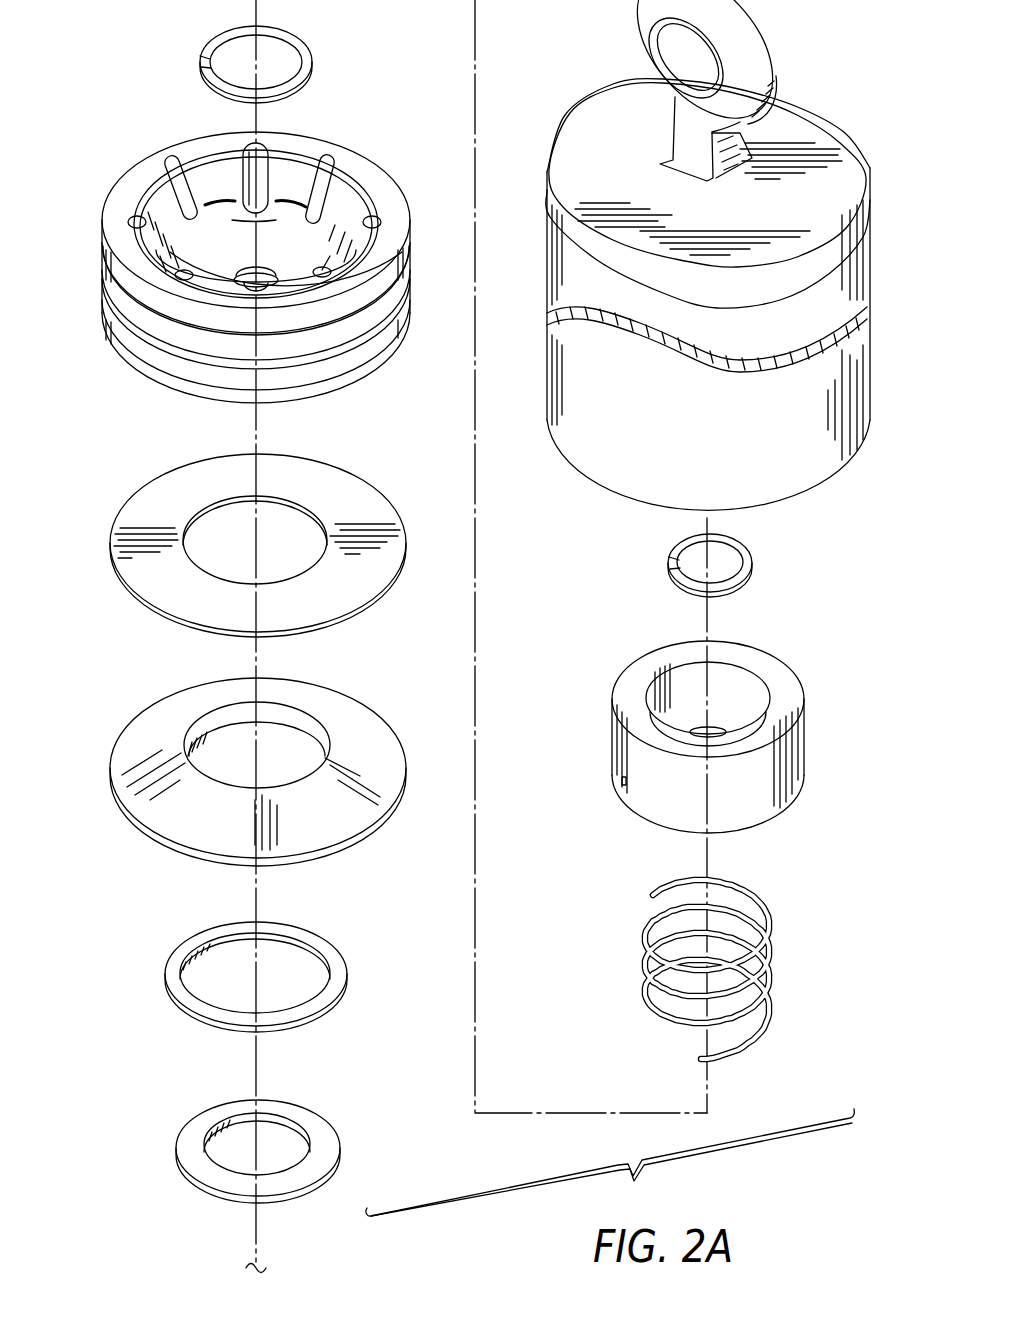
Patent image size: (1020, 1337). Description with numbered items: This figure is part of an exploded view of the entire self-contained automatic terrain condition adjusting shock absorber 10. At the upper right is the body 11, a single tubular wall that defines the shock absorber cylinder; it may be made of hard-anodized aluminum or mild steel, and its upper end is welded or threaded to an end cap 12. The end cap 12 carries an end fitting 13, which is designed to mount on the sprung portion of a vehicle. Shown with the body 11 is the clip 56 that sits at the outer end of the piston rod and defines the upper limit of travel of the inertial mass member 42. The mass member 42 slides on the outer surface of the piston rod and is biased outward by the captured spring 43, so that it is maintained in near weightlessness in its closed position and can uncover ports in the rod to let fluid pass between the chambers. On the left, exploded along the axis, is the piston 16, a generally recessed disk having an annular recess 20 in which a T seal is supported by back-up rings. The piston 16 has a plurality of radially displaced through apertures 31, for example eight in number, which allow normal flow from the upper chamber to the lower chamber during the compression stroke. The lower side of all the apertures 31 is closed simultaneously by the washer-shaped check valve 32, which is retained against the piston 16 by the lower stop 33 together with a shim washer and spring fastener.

The shock absorber 10 is at (610, 1162).
The body 11 is at (881, 272).
The end cap 12 is at (817, 116).
The end fitting 13 is at (650, 36).
The piston 16 is at (118, 208).
The annular recess 20 is at (394, 301).
The through apertures 31 is at (137, 216).
The check valve 32 is at (163, 492).
The lower stop 33 is at (165, 717).
The inertial mass member 42 is at (625, 738).
The captured spring 43 is at (649, 960).
The clip 56 is at (675, 560).